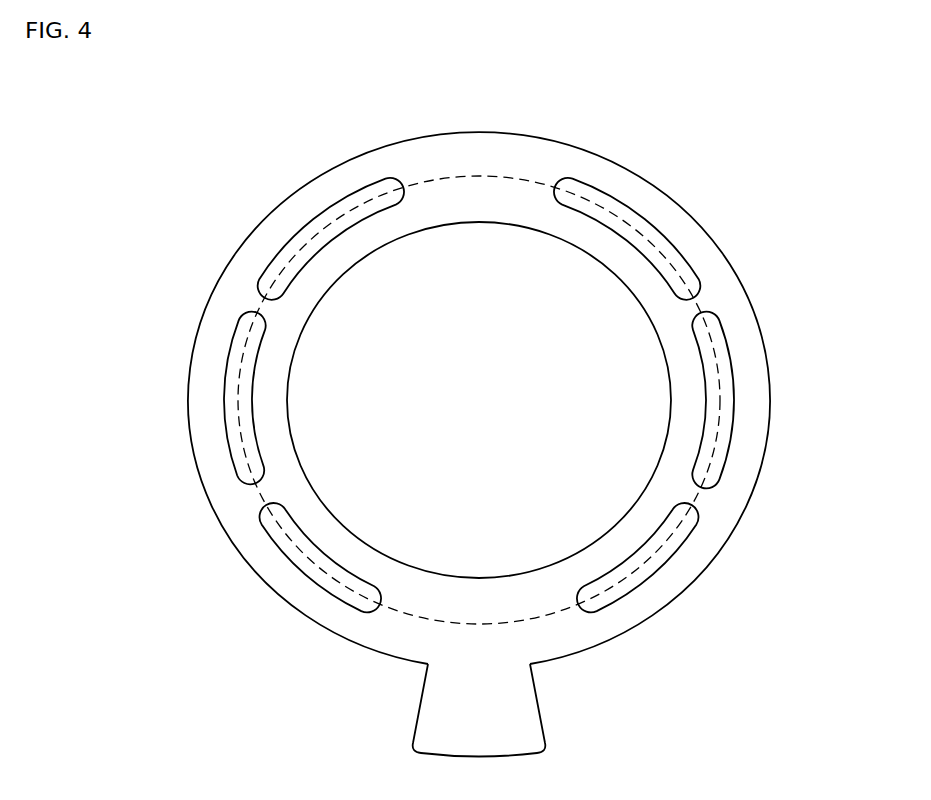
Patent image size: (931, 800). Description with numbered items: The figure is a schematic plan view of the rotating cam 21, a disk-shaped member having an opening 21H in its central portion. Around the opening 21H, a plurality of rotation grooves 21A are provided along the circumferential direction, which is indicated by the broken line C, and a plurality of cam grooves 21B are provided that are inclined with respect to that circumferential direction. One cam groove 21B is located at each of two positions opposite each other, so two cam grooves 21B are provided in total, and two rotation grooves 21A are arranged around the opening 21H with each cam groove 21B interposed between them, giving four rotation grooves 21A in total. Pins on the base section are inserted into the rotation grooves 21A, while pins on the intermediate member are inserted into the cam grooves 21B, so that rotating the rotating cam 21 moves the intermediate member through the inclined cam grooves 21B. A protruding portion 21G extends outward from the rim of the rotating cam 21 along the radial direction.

The rotating cam 21 is at (733, 124).
The rotation groove 21A is at (276, 256).
The cam groove 21B is at (230, 425).
The tab / projection portion 21G is at (528, 703).
The opening 21H is at (483, 243).
The broken line C is at (423, 178).